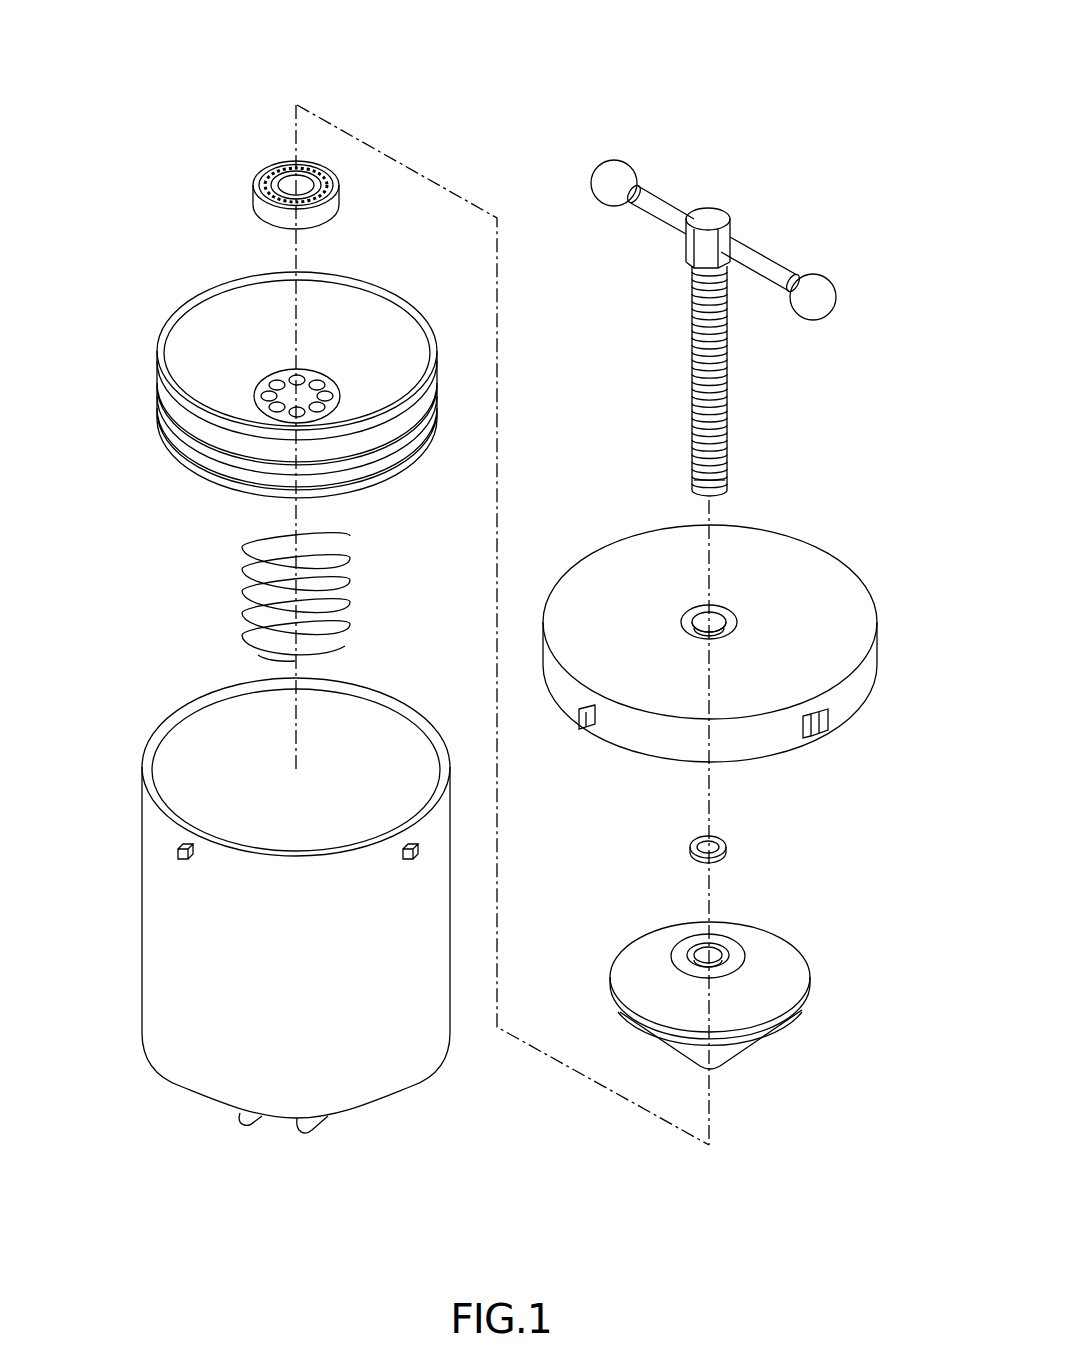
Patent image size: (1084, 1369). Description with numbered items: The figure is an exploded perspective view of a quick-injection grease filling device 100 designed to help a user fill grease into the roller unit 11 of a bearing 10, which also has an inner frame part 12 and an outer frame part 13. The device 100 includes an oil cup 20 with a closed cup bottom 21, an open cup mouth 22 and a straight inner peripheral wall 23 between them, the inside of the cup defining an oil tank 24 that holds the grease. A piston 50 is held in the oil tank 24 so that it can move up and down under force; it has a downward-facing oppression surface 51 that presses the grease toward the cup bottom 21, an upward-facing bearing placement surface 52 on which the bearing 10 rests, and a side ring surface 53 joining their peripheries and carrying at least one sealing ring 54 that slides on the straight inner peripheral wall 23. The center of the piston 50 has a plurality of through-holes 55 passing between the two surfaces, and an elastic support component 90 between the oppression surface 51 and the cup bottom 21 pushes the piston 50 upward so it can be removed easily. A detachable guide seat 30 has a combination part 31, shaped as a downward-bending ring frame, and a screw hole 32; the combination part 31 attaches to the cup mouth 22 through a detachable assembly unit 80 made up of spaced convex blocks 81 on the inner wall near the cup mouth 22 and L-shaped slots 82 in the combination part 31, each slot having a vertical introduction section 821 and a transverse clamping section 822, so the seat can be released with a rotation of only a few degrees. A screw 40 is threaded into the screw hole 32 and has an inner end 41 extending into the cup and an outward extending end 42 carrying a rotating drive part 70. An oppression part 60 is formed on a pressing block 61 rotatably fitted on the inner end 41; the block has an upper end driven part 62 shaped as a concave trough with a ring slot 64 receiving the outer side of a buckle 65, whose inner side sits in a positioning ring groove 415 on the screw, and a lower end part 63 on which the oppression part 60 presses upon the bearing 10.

The quick-injection grease filling device 100 is at (818, 30).
The bearing 10 is at (253, 165).
The roller unit 11 is at (318, 173).
The inner frame part 12 is at (287, 175).
The outer frame part 13 is at (255, 197).
The piston 50 is at (168, 316).
The oppression surface 51 is at (190, 478).
The bearing placement surface 52 is at (352, 360).
The side ring surface 53 is at (162, 410).
The sealing ring 54 is at (170, 455).
The through-holes 55 is at (290, 378).
The elastic support component 90 is at (240, 600).
The oil cup 20 is at (180, 695).
The cup bottom 21 is at (380, 1107).
The cup mouth 22 is at (355, 700).
The straight inner peripheral wall 23 is at (205, 963).
The oil tank 24 is at (214, 808).
The screw 40 is at (738, 375).
The inner end 41 is at (698, 495).
The positioning ring groove 415 is at (690, 475).
The outward extending end 42 is at (707, 215).
The rotating drive part 70 is at (766, 247).
The detachable guide seat 30 is at (842, 535).
The combination part 31 is at (858, 687).
The screw hole 32 is at (700, 616).
The detachable assembly unit 80 is at (537, 876).
The convex blocks 81 is at (412, 853).
The L-shaped slots 82 is at (585, 728).
The vertical introduction section 821 is at (578, 720).
The transverse clamping section 822 is at (590, 718).
The buckle 65 is at (725, 845).
The oppression part 60 is at (713, 1068).
The pressing block 61 is at (798, 935).
The upper end driven part 62 is at (738, 950).
The lower end part 63 is at (730, 1060).
The ring slot 64 is at (718, 945).